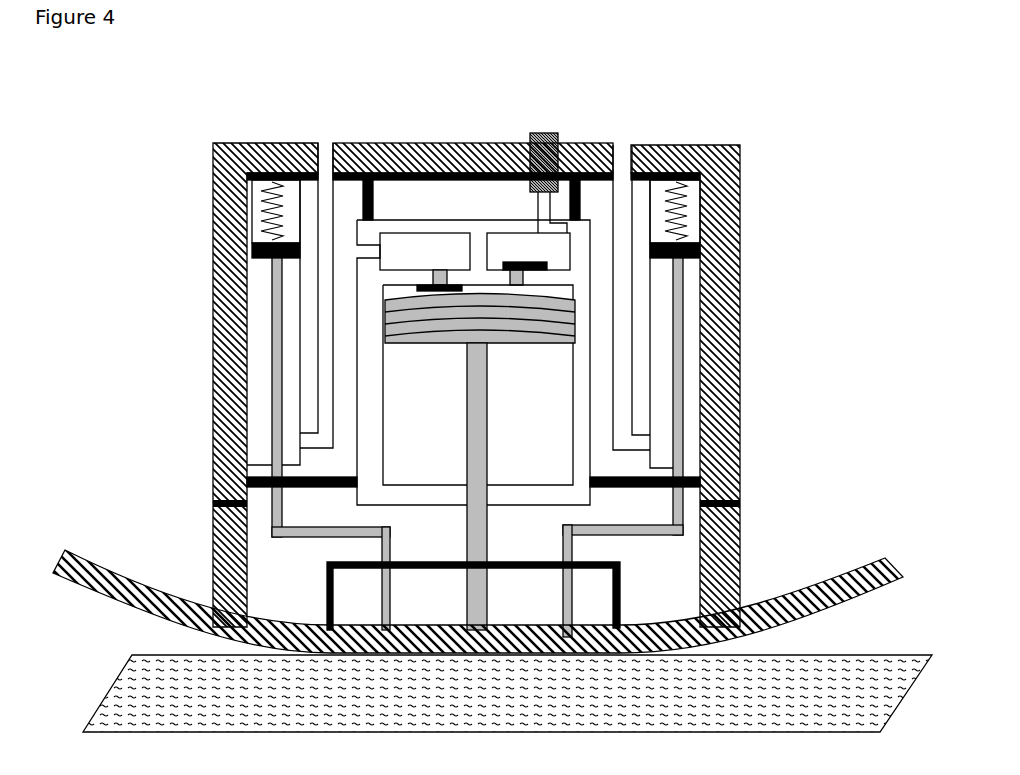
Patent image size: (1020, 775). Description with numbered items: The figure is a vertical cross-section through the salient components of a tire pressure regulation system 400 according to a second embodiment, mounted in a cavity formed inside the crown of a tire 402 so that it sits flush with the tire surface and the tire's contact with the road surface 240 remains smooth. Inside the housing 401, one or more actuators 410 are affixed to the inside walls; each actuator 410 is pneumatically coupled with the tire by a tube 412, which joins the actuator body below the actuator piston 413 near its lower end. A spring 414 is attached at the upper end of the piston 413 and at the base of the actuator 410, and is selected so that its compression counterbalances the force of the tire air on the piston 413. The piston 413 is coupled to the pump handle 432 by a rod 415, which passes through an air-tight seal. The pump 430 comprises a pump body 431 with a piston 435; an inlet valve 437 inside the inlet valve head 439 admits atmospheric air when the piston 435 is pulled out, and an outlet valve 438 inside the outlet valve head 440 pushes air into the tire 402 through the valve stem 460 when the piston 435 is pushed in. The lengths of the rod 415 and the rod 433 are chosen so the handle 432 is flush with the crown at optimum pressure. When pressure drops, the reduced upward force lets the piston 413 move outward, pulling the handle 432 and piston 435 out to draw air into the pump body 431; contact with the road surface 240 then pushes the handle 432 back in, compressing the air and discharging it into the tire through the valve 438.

The tire pressure regulation system 400 is at (192, 128).
The housing 401 is at (208, 204).
The tube 412 is at (642, 218).
The spring 414 is at (696, 212).
The actuator piston 413 is at (740, 288).
The actuator 410 is at (665, 332).
The rod 415 is at (686, 452).
The pump 430 is at (545, 535).
The pump body 431 is at (608, 370).
The rod 433 is at (500, 450).
The piston 435 is at (530, 333).
The inlet valve 437 is at (421, 273).
The outlet valve 438 is at (502, 252).
The inlet valve head 439 is at (457, 225).
The outlet valve head 440 is at (528, 225).
The valve stem 460 is at (545, 125).
The pump handle 432 is at (338, 627).
The tire 402 is at (68, 596).
The road surface 240 is at (84, 715).